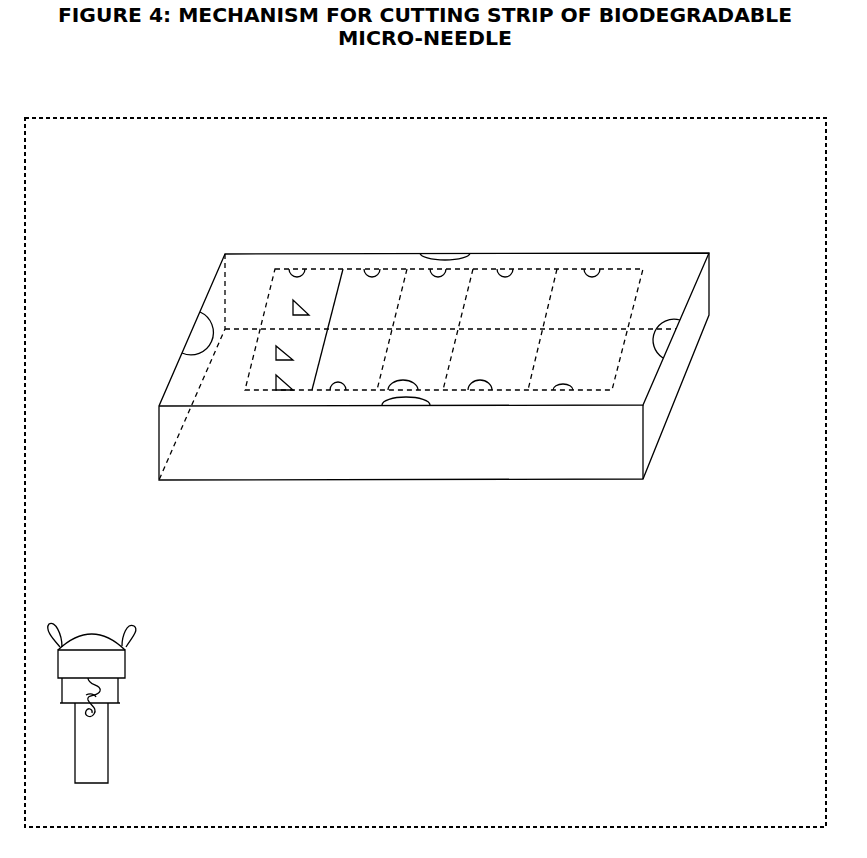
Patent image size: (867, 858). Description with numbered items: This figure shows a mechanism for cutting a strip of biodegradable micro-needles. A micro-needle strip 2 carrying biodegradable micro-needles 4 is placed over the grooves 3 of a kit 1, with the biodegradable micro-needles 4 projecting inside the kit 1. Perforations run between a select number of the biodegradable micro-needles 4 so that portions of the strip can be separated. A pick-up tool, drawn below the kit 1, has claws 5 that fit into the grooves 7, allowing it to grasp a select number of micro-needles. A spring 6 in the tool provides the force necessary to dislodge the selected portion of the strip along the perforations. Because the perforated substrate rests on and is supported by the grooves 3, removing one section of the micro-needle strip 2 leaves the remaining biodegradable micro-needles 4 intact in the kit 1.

The kit 1 is at (777, 389).
The micro-needle strip comprising of biodegradable micro-needles 2 is at (458, 269).
The grooves 3 is at (423, 405).
The biodegradable micro-needles 4 is at (277, 358).
The claws 5 is at (142, 617).
The spring 6 is at (105, 693).
The grooves 7 is at (338, 390).